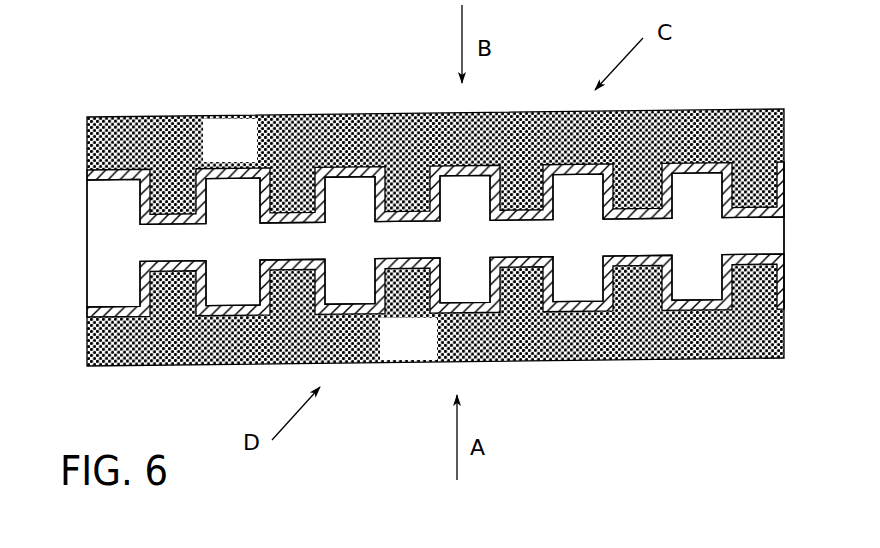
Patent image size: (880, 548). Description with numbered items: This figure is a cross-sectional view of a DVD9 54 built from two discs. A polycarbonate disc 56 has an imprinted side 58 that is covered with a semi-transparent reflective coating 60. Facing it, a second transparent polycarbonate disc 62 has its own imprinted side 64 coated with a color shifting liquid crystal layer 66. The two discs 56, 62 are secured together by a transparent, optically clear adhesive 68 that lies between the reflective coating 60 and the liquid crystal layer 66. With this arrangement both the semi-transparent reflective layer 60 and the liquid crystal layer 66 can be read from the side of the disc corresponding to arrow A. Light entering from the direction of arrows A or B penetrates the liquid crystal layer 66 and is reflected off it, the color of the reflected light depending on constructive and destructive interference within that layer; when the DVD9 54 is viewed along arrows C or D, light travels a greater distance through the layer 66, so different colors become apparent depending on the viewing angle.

The DVD9 54 is at (615, 380).
The polycarbonate disc 56 is at (422, 347).
The imprinted side 58 is at (93, 307).
The semi-transparent reflective coating 60 is at (786, 273).
The second transparent polycarbonate disc 62 is at (243, 153).
The imprinted side 64 is at (112, 170).
The liquid crystal layer 66 is at (785, 200).
The transparent, optically clear adhesive 68 is at (362, 253).